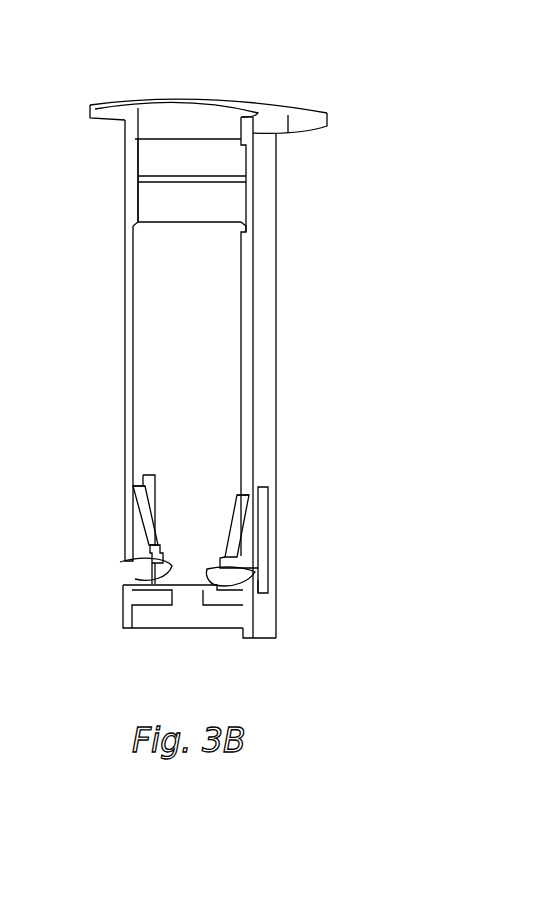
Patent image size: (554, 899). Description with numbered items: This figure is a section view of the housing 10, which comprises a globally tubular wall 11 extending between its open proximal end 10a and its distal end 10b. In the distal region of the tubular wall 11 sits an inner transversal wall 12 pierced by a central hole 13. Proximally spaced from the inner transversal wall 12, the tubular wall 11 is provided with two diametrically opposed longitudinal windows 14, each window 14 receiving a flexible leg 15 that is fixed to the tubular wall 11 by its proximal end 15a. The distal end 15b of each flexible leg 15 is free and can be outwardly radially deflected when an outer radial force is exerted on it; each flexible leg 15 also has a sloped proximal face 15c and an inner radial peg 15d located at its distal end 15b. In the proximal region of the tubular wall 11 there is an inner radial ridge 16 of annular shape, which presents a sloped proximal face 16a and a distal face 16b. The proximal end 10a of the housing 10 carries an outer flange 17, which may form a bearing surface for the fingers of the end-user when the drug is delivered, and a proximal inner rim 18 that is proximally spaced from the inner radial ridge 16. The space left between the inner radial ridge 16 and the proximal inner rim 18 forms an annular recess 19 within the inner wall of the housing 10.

The housing 10 is at (289, 348).
The proximal end of the housing 10a is at (248, 82).
The lower end of housing 10b is at (261, 657).
The tubular wall 11 is at (128, 289).
The inner transversal wall 12 is at (227, 600).
The central hole 13 is at (183, 597).
The longitudinal window 14 is at (130, 573).
The flexible leg 15 is at (120, 520).
The proximal end of the flexible leg 15a is at (125, 487).
The distal end of the flexible leg 15b is at (120, 560).
The sloped proximal face 15c is at (152, 505).
The inner radial peg 15d is at (145, 575).
The inner radial ridge 16 is at (143, 200).
The sloped proximal face of the inner radial ridge 16a is at (140, 183).
The distal face of the inner radial ridge 16b is at (165, 226).
The outer flange 17 is at (313, 140).
The proximal inner rim 18 is at (135, 127).
The annular recess 19 is at (140, 160).